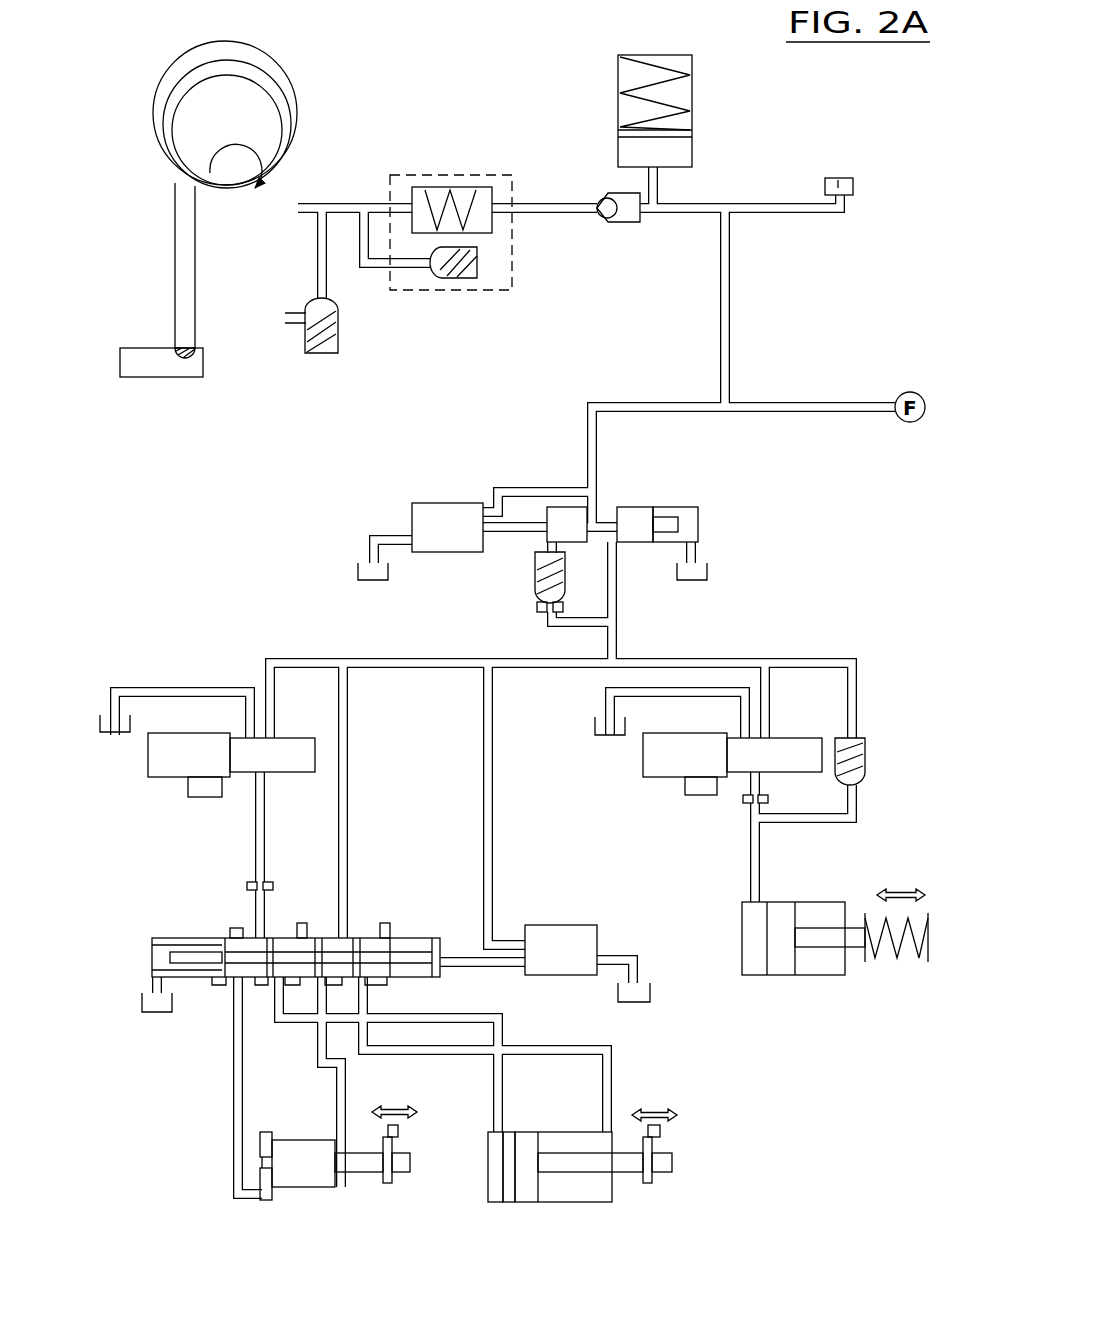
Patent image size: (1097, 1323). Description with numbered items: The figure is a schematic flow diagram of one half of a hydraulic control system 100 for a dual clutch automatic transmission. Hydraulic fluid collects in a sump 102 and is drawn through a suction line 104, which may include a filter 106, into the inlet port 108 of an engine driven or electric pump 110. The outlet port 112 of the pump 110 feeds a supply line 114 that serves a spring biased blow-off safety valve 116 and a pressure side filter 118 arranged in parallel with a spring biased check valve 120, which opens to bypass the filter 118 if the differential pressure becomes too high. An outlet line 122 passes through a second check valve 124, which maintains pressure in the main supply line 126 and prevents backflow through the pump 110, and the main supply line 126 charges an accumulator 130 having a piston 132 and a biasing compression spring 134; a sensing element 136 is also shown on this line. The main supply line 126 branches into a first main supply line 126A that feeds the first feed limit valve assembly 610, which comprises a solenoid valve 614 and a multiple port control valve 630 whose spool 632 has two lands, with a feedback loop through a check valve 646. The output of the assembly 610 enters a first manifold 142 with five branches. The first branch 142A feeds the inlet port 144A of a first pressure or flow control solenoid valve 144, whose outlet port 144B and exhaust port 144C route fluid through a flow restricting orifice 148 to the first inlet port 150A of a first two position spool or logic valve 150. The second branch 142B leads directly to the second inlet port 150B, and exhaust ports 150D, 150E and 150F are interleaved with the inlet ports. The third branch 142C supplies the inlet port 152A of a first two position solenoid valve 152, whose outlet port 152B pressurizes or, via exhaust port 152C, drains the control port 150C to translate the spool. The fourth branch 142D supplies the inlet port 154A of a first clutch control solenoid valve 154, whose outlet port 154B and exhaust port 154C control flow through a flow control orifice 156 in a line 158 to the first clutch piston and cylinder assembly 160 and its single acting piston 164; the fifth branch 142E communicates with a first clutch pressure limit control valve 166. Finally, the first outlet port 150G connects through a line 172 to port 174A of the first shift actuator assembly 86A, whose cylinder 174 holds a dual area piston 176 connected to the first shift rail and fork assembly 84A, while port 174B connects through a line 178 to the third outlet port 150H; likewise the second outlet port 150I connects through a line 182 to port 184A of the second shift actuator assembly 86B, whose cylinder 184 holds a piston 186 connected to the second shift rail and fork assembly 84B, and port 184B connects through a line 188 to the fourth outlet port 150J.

The hydraulic control system 100 is at (790, 120).
The sump 102 is at (150, 378).
The suction line 104 is at (198, 258).
The filter 106 is at (178, 350).
The inlet port 108 is at (178, 226).
The pump 110 is at (247, 86).
The outlet port 112 is at (300, 204).
The supply line 114 is at (368, 205).
The blow-off safety valve 116 is at (338, 306).
The pressure side filter 118 is at (440, 188).
The check valve 120 is at (452, 280).
The outlet line 122 is at (545, 202).
The second check valve 124 is at (620, 222).
The main supply line 126 is at (720, 318).
The first main supply line 126A is at (587, 420).
The accumulator 130 is at (657, 110).
The piston 132 is at (640, 135).
The biasing compression spring 134 is at (632, 108).
The pressure sensor 136 is at (835, 181).
The first manifold 142 is at (612, 662).
The first branch 142A is at (265, 668).
The second branch 142B is at (346, 672).
The third branch 142C is at (493, 722).
The fourth branch 142D is at (770, 675).
The fifth branch 142E is at (858, 675).
The first pressure or flow control solenoid valve 144 is at (218, 774).
The inlet port 144A is at (270, 738).
The outlet port 144B is at (265, 790).
The exhaust port 144C is at (247, 736).
The flow restricting orifice 148 is at (250, 882).
The first two position spool or logic valve 150 is at (270, 956).
The first inlet port 150A is at (265, 935).
The second inlet port 150B is at (347, 935).
The control port 150C is at (433, 947).
The exhaust port 150D is at (212, 932).
The exhaust port 150E is at (300, 938).
The exhaust port 150F is at (403, 935).
The first outlet port 150G is at (222, 990).
The third outlet port 150H is at (316, 1030).
The second outlet port 150I is at (292, 1000).
The fourth outlet port 150J is at (370, 983).
The first two position solenoid valve 152 is at (569, 920).
The inlet port 152A is at (523, 926).
The outlet port 152B is at (520, 970).
The exhaust port 152C is at (640, 932).
The first clutch control solenoid valve 154 is at (700, 760).
The inlet port 154A is at (762, 738).
The outlet port 154B is at (762, 785).
The exhaust port 154C is at (745, 736).
The flow control orifice 156 is at (740, 803).
The line 158 is at (750, 868).
The first clutch piston and cylinder assembly 160 is at (835, 964).
The single acting piston 164 is at (780, 978).
The first clutch pressure limit control valve 166 is at (862, 766).
The line 172 is at (232, 1110).
The first cylinder or housing 174 is at (265, 1190).
The port 174A is at (262, 1170).
The port 174B is at (345, 1140).
The first dual area piston 176 is at (292, 1170).
The line 178 is at (338, 1105).
The line 182 is at (497, 1105).
The housing or cylinder 184 is at (577, 1195).
The port 184A is at (490, 1135).
The port 184B is at (603, 1128).
The piston 186 is at (533, 1192).
The line 188 is at (610, 1082).
The first feed limit valve assembly 610 is at (525, 530).
The solenoid valve 614 is at (435, 503).
The multiple port control valve 630 is at (655, 495).
The spool 632 is at (635, 518).
The check valve 646 is at (538, 591).
The first shift rail and fork assembly 84A is at (373, 1165).
The second shift rail and fork assembly 84B is at (673, 1162).
The first shift actuator assembly 86A is at (318, 1154).
The second shift actuator assembly 86B is at (582, 1160).